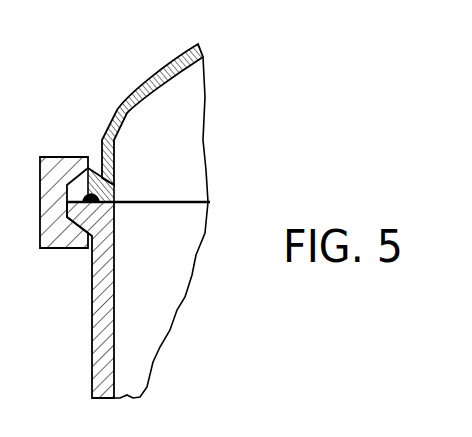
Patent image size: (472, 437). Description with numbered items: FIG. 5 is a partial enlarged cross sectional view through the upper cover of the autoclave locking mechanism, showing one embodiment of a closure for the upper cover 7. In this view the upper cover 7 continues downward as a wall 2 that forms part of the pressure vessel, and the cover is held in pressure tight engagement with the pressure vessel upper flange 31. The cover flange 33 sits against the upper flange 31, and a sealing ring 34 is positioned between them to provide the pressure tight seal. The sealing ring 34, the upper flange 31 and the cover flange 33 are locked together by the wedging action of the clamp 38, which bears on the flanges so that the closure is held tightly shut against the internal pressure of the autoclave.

The wall 2 is at (92, 289).
The upper cover 7 is at (158, 72).
The pressure vessel upper flange 31 is at (114, 218).
The cover flange 33 is at (112, 185).
The sealing ring 34 is at (99, 194).
The clamp 38 is at (57, 156).